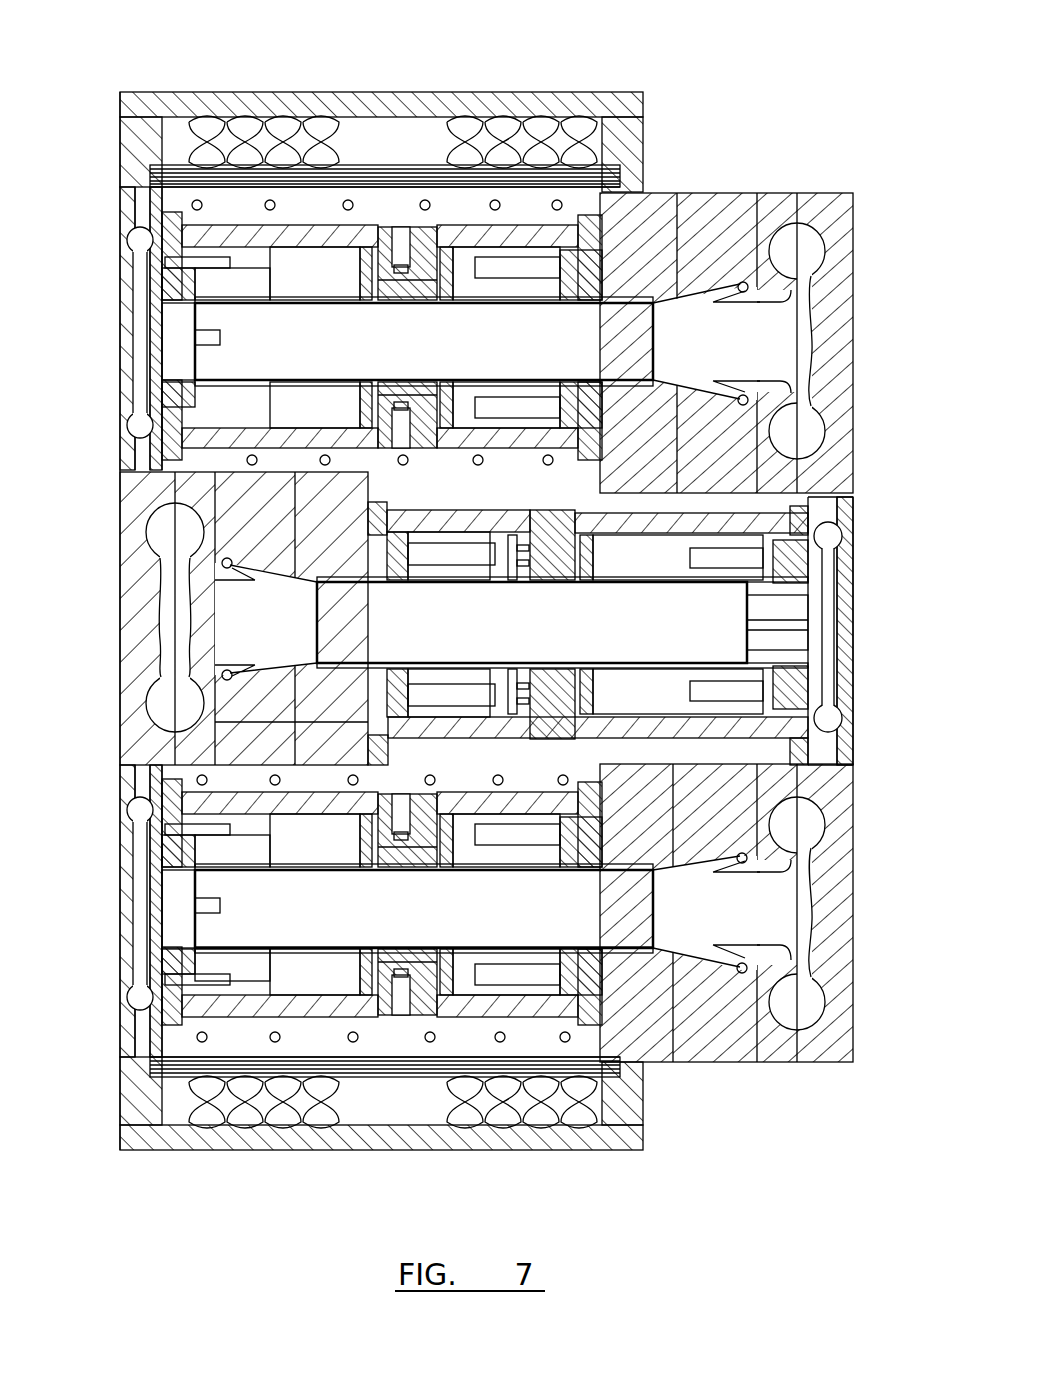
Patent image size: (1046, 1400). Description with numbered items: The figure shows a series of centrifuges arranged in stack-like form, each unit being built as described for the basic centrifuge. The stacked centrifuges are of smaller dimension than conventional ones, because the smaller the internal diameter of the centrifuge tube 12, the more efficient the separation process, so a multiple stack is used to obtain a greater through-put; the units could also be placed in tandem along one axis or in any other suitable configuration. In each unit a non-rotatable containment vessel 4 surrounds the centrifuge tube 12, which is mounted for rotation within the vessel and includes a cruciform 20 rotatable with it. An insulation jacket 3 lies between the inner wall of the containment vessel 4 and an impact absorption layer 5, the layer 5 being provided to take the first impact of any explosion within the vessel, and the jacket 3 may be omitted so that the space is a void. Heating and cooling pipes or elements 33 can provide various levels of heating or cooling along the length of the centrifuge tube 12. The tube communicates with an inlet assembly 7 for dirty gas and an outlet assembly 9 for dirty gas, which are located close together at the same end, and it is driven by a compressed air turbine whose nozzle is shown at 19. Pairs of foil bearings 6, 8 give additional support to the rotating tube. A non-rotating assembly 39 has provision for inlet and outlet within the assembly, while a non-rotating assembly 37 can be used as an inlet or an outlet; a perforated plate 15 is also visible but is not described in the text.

The insulation jacket 3 is at (415, 103).
The non-rotatable containment vessel 4 is at (642, 97).
The impact absorption layer 5 is at (642, 186).
The foil bearings 6 is at (230, 258).
The inlet assembly 7 is at (822, 265).
The foil bearings 8 is at (292, 662).
The outlet assembly for dirty gas 9 is at (222, 565).
The centrifuge tube 12 is at (258, 283).
The perforated plate 15 is at (335, 200).
The nozzle of the turbine 19 is at (745, 283).
The cruciform 20 is at (188, 330).
The heating and cooling pipes or elements 33 is at (430, 205).
The non-rotating assembly 37 is at (132, 342).
The non-rotating assembly 39 is at (852, 230).